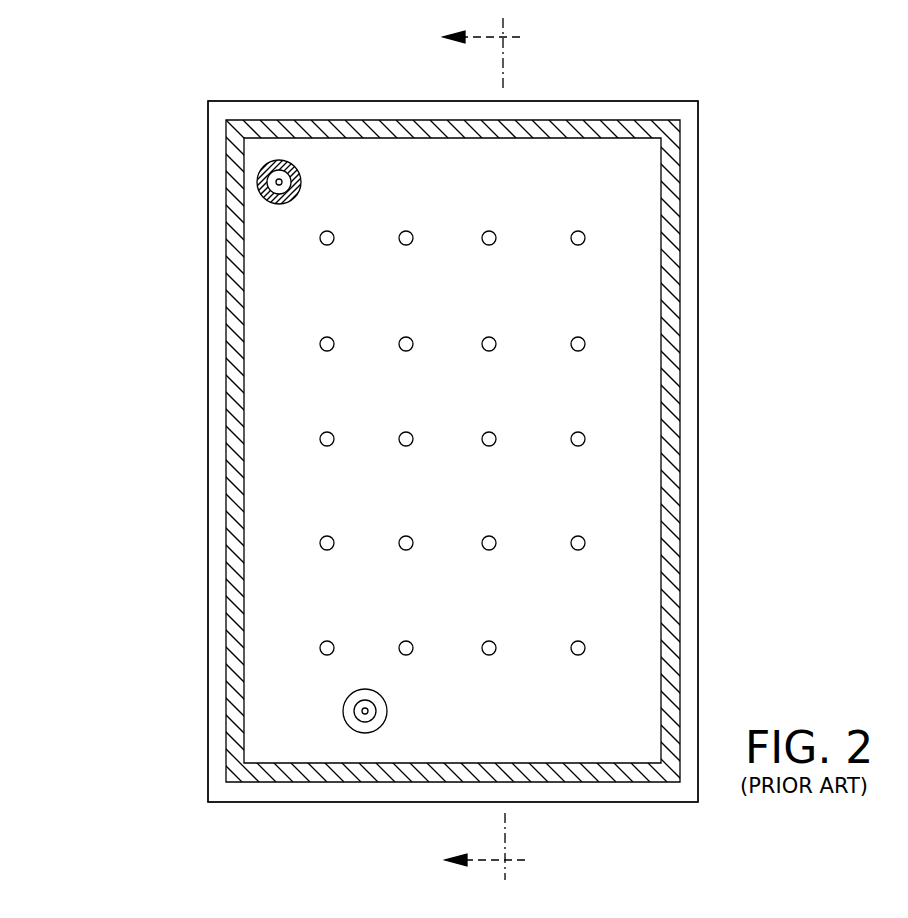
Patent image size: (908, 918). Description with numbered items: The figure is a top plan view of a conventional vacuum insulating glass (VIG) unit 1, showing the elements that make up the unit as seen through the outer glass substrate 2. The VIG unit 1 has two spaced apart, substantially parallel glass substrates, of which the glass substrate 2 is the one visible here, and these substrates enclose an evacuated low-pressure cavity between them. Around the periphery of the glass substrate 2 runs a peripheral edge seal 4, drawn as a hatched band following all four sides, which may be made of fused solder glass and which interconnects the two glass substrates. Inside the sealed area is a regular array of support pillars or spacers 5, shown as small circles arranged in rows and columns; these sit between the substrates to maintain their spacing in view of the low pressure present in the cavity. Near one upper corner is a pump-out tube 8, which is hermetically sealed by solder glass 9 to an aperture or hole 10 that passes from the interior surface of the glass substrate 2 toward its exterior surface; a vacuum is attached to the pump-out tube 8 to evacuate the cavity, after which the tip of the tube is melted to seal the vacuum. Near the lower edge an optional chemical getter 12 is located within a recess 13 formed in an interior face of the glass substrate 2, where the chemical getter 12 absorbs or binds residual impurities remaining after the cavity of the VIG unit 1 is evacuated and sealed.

The VIG unit 1 is at (200, 675).
The glass substrate 2 is at (444, 110).
The peripheral edge seal 4 is at (345, 126).
The support pillars/spacers 5 is at (585, 343).
The pump-out tube 8 is at (262, 178).
The solder glass 9 is at (280, 207).
The aperture/hole 10 is at (262, 190).
The chemical getter 12 is at (356, 716).
The recess 13 is at (388, 710).